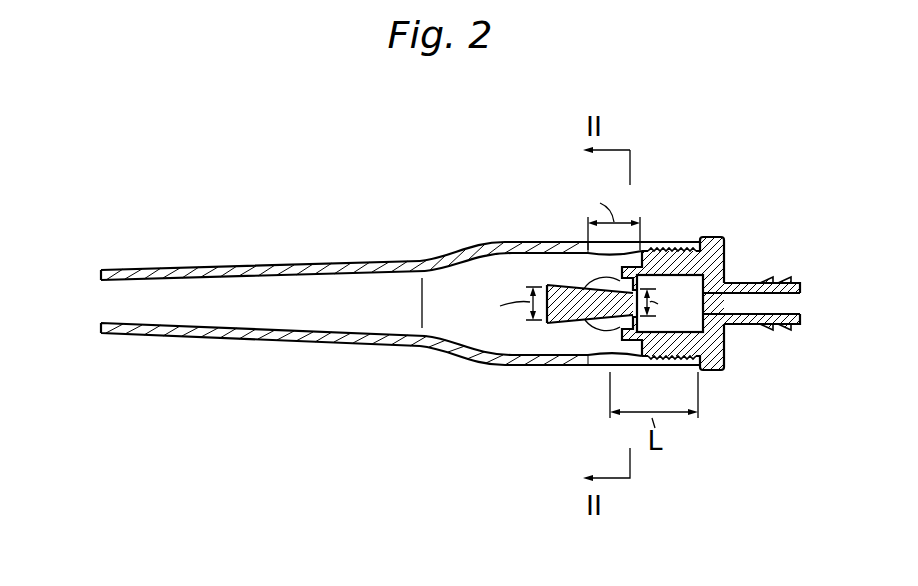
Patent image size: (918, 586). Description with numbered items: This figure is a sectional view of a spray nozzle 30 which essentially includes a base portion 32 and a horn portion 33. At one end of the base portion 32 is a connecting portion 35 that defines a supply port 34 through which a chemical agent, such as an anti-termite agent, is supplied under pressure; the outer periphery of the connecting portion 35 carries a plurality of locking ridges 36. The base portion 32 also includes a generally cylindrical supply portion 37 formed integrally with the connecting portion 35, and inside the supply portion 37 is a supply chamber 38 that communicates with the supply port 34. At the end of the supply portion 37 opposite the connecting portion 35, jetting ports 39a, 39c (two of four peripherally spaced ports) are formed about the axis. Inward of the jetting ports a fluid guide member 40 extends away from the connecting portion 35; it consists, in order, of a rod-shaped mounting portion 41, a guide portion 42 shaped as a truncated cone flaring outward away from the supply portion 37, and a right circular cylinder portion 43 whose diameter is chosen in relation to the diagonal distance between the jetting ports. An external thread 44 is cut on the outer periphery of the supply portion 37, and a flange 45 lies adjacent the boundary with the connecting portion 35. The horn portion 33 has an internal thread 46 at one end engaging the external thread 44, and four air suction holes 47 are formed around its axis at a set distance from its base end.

The nozzle 30 is at (650, 241).
The base portion 32 is at (760, 215).
The horn portion 33 is at (278, 248).
The supply port 34 is at (770, 318).
The connecting portion 35 is at (742, 324).
The locking ridges 36 is at (787, 282).
The supply portion 37 is at (660, 343).
The supply chamber 38 is at (682, 280).
The jetting port 39a is at (590, 282).
The jetting port 39c is at (610, 334).
The fluid guide member 40 is at (535, 284).
The rod-shaped mounting portion 41 is at (600, 329).
The guide portion 42 is at (588, 319).
The right circular cylinder portion 43 is at (520, 343).
The external thread 44 is at (660, 249).
The flange 45 is at (712, 237).
The internal thread 46 is at (690, 357).
The air suction holes 47 is at (598, 249).